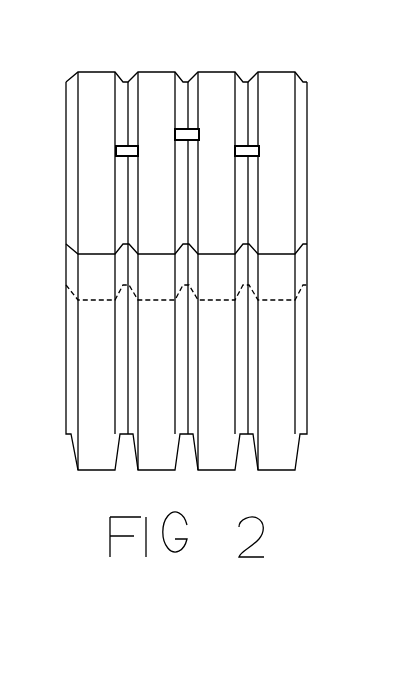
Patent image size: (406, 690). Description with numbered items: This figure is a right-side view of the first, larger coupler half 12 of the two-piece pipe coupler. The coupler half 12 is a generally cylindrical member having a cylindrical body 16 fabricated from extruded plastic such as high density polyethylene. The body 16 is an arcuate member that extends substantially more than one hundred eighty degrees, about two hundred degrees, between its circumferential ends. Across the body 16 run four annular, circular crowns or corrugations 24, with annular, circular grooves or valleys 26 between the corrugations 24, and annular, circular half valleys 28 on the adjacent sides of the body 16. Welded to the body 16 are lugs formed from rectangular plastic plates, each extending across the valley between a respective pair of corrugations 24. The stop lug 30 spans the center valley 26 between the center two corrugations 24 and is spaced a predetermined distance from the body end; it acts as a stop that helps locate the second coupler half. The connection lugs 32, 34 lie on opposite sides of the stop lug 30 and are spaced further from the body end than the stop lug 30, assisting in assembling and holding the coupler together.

The first coupler half 12 is at (299, 414).
The cylindrical body 16 is at (299, 338).
The corrugations 24 is at (224, 64).
The valleys 26 is at (180, 73).
The half valleys 28 is at (295, 74).
The stop lug 30 is at (168, 121).
The connection lug 32 is at (108, 144).
The connection lug 34 is at (251, 143).